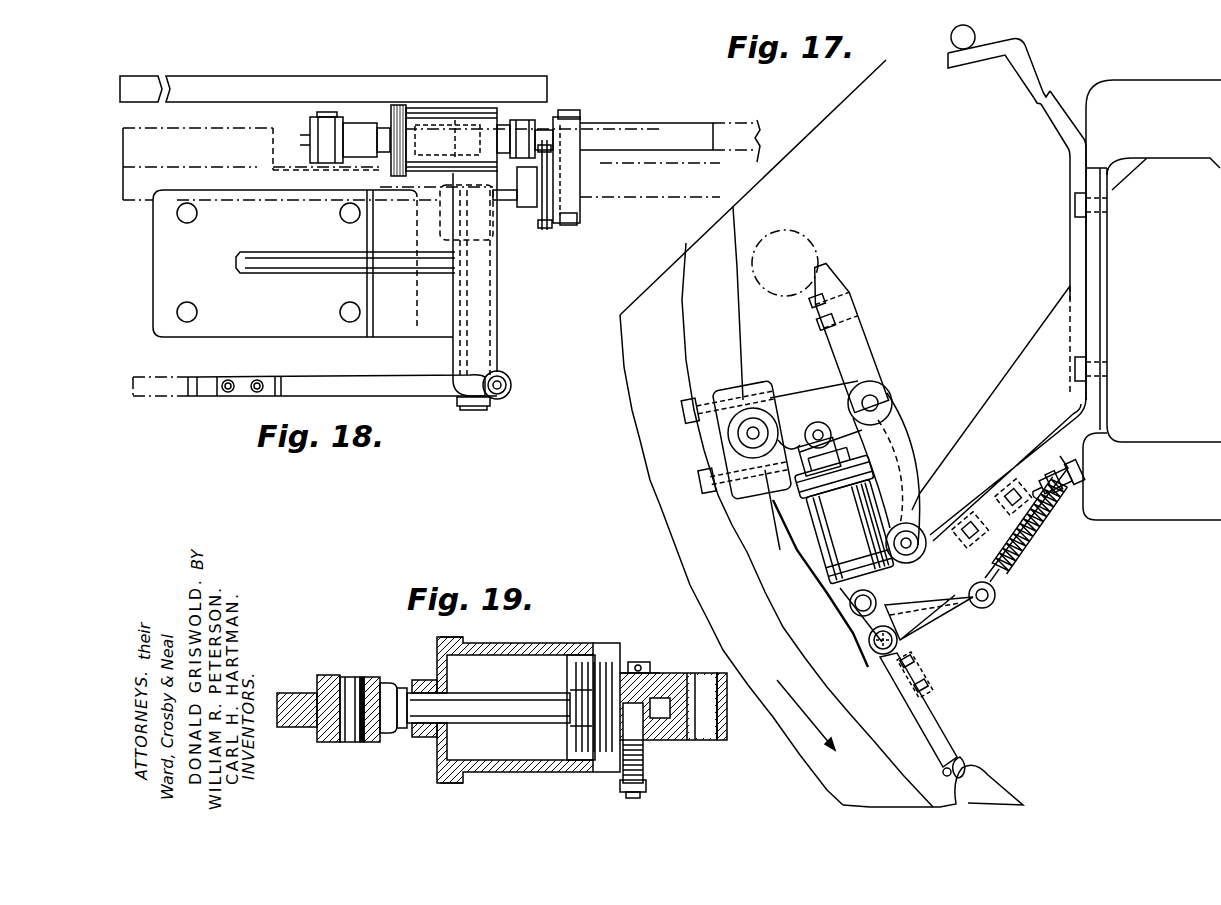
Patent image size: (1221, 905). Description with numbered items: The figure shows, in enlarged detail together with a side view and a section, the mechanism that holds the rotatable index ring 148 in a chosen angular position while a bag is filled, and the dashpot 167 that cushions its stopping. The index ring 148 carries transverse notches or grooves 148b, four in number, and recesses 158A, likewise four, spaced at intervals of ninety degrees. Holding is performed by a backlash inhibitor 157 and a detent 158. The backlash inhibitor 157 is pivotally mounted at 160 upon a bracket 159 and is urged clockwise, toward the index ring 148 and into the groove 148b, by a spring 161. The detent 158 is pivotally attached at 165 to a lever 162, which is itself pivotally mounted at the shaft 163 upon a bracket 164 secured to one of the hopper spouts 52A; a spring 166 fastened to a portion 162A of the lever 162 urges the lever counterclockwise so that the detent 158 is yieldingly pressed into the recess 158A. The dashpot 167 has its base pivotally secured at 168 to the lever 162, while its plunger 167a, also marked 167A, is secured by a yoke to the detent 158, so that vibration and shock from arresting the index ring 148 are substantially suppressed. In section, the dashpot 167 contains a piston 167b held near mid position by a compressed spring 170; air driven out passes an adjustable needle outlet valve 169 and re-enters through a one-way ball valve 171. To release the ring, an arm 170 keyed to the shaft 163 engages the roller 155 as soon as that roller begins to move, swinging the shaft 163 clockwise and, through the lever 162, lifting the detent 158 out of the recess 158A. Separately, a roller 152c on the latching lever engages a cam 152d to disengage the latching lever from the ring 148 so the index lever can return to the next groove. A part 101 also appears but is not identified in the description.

In FIG. 17, the hopper spout 52A is at (1178, 512).
In FIG. 18, the frame member 101 is at (306, 138).
In FIG. 17, the index ring 148 is at (980, 785).
In FIG. 17, the slot 148b is at (960, 755).
In FIG. 17, the roller 152c is at (951, 38).
In FIG. 17, the cam 152d is at (948, 58).
In FIG. 18, the roller 155 is at (165, 396).
In FIG. 17, the roller 155 is at (812, 252).
In FIG. 17, the backlash inhibitor 157 is at (930, 740).
In FIG. 18, the detent 158 is at (312, 127).
In FIG. 19, the detent 158 is at (279, 693).
In FIG. 17, the detent 158 is at (813, 447).
In FIG. 17, the recess 158A is at (750, 409).
In FIG. 17, the bracket 159 is at (918, 622).
In FIG. 17, the pivot 160 is at (869, 645).
In FIG. 17, the spring 161 is at (850, 601).
In FIG. 17, the lever 162 is at (898, 432).
In FIG. 19, the portion of lever 162A is at (730, 715).
In FIG. 17, the portion of lever 162A is at (968, 600).
In FIG. 18, the shaft 163 is at (470, 407).
In FIG. 17, the shaft 163 is at (912, 535).
In FIG. 18, the bracket 164 is at (173, 240).
In FIG. 17, the bracket 164 is at (1012, 358).
In FIG. 17, the pivot 165 is at (873, 398).
In FIG. 17, the spring 166 is at (1040, 530).
In FIG. 18, the dashpot 167 is at (428, 113).
In FIG. 19, the dashpot 167 is at (512, 632).
In FIG. 17, the dashpot 167 is at (822, 528).
In FIG. 19, the plunger 167a is at (433, 732).
In FIG. 19, the piston 167b is at (571, 652).
In FIG. 17, the plunger 167A is at (798, 495).
In FIG. 19, the pivot 168 is at (707, 735).
In FIG. 17, the pivot 168 is at (852, 608).
In FIG. 19, the needle outlet valve 169 is at (643, 733).
In FIG. 18, the spring 170 is at (323, 376).
In FIG. 19, the spring 170 is at (588, 670).
In FIG. 17, the spring 170 is at (825, 283).
In FIG. 19, the one-way ball valve 171 is at (650, 662).